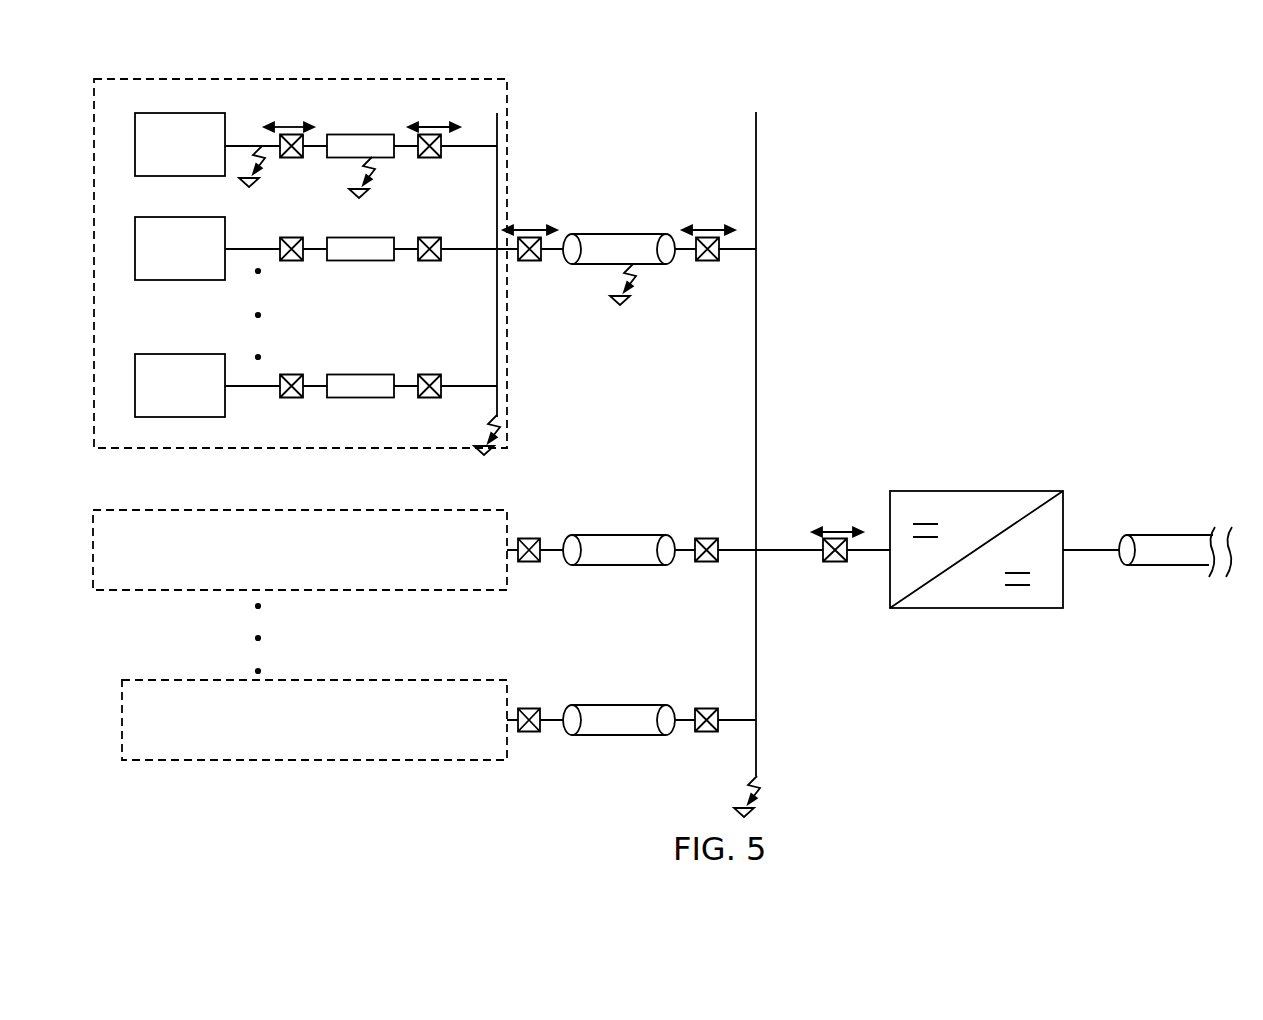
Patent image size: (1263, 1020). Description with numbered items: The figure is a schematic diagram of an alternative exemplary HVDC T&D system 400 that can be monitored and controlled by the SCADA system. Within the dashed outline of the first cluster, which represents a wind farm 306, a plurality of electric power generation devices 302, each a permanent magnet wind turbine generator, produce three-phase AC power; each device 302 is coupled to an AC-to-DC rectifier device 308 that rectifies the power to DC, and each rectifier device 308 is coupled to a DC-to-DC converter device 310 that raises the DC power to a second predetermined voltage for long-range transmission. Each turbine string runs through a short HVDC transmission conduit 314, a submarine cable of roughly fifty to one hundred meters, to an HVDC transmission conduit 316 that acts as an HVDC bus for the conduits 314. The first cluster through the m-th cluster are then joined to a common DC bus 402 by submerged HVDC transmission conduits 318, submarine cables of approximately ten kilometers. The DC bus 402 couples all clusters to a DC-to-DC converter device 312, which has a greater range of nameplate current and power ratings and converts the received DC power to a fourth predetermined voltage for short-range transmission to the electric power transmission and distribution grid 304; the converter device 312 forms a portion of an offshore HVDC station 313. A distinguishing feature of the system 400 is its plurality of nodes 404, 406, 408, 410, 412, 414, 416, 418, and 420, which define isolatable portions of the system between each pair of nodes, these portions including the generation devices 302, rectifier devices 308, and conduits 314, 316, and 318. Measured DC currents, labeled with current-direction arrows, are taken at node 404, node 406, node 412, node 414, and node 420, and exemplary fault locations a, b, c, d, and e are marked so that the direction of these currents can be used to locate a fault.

The electric power generation device 302 is at (176, 230).
The AC-to-DC rectifier device 308 is at (176, 230).
The DC-to-DC converter device 310 is at (200, 120).
The electric power transmission and distribution grid 304 is at (1204, 466).
The wind farm 306 is at (606, 80).
The DC-to-DC converter device 312 is at (967, 609).
The offshore HVDC station 313 is at (945, 536).
The HVDC transmission conduit 314 is at (337, 158).
The HVDC transmission conduit 316 is at (497, 180).
The HVDC transmission conduit 318 is at (602, 246).
The HVDC T&D system 400 is at (1006, 77).
The DC bus 402 is at (757, 346).
The node 404 is at (278, 145).
The node 406 is at (433, 158).
The node 408 is at (296, 261).
The node 410 is at (433, 261).
The node 412 is at (531, 261).
The node 414 is at (708, 261).
The node 416 is at (529, 562).
The node 418 is at (707, 562).
The node 420 is at (840, 562).